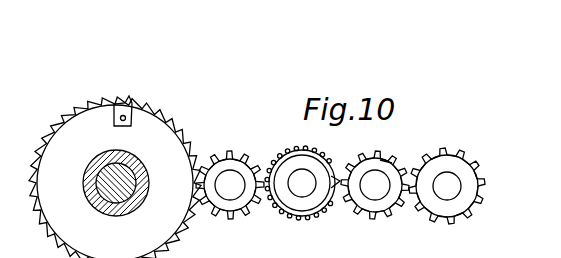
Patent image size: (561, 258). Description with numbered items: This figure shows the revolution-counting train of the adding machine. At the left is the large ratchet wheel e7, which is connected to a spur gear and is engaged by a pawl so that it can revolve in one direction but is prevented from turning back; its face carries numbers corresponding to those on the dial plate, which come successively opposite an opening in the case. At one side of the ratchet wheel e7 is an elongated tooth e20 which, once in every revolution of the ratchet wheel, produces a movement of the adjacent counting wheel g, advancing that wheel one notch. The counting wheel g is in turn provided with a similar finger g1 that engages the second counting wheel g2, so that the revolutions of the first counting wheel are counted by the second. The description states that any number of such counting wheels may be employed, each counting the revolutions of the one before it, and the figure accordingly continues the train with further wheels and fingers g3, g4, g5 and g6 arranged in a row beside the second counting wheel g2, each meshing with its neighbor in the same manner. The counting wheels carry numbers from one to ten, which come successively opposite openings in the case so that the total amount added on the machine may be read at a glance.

The ratchet wheel e7 is at (67, 110).
The elongated tooth e20 is at (130, 98).
The counting wheel g is at (245, 152).
The finger g1 is at (240, 210).
The second counting wheel g2 is at (308, 215).
The third gear g3 is at (335, 172).
The fourth gear g4 is at (385, 205).
The fifth gear g5 is at (388, 152).
The sixth gear g6 is at (453, 204).